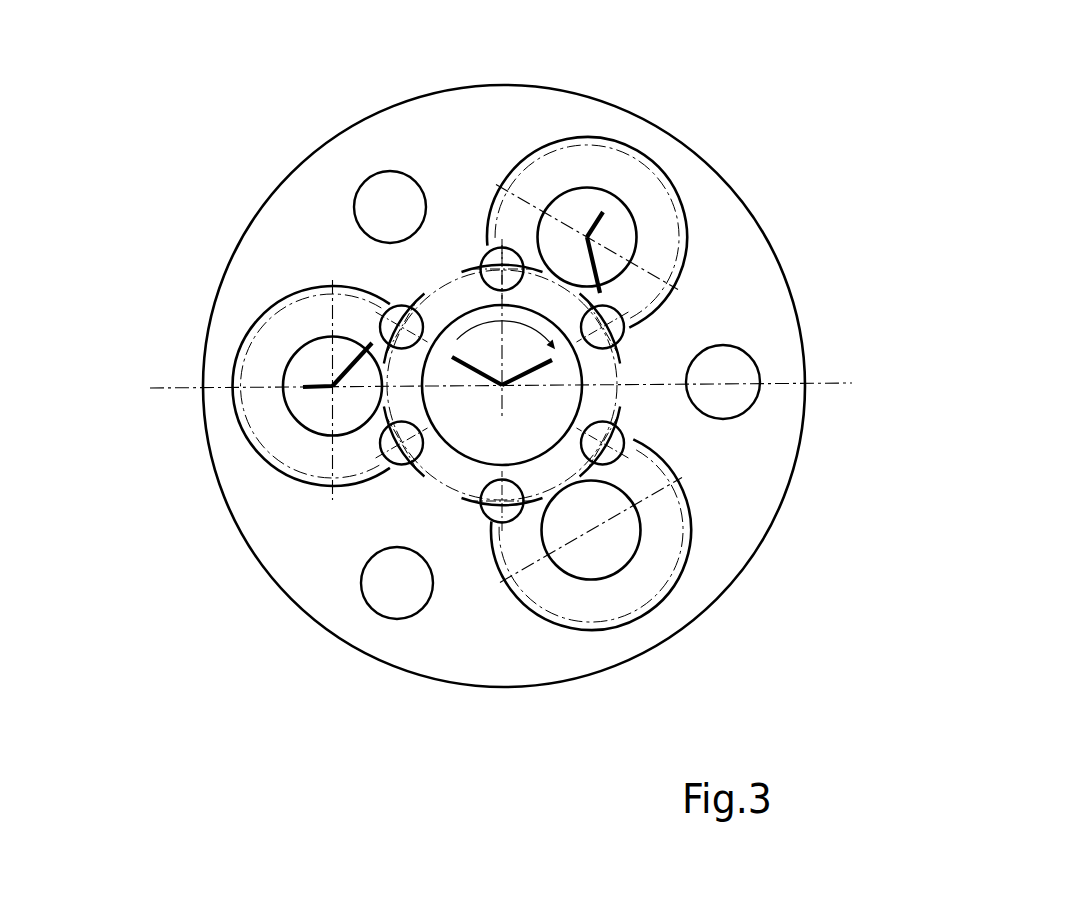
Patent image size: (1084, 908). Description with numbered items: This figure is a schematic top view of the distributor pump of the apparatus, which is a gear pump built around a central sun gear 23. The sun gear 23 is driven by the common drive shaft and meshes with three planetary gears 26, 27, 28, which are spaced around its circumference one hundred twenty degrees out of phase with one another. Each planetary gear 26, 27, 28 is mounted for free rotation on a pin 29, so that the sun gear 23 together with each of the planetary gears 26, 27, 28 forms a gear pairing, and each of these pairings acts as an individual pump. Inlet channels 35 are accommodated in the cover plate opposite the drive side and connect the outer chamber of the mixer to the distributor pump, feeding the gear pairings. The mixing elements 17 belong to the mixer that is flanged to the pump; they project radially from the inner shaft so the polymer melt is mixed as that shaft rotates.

The mixing elements 17 is at (487, 260).
The sun gear 23 is at (603, 403).
The planetary gear 26 is at (312, 408).
The planetary gear 27 is at (607, 558).
The planetary gear 28 is at (627, 245).
The pins 29 is at (328, 385).
The inlet channels 35 is at (387, 308).